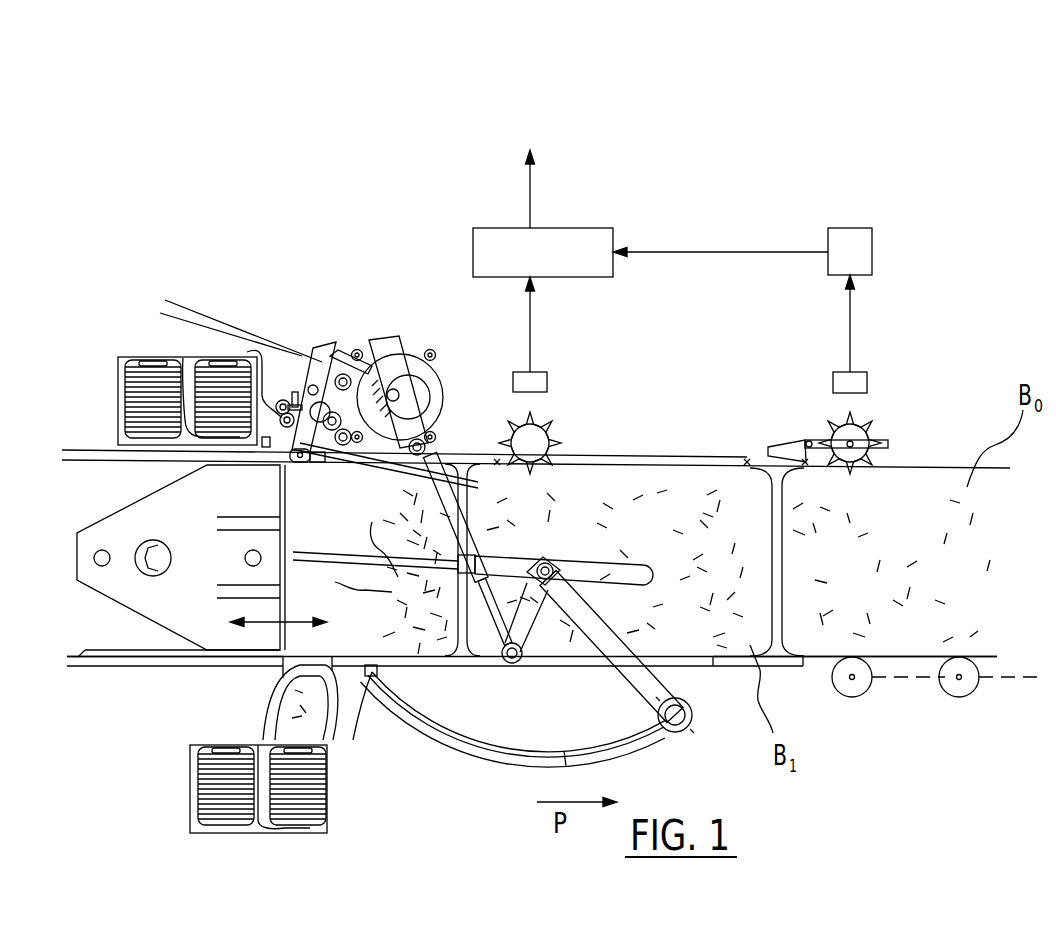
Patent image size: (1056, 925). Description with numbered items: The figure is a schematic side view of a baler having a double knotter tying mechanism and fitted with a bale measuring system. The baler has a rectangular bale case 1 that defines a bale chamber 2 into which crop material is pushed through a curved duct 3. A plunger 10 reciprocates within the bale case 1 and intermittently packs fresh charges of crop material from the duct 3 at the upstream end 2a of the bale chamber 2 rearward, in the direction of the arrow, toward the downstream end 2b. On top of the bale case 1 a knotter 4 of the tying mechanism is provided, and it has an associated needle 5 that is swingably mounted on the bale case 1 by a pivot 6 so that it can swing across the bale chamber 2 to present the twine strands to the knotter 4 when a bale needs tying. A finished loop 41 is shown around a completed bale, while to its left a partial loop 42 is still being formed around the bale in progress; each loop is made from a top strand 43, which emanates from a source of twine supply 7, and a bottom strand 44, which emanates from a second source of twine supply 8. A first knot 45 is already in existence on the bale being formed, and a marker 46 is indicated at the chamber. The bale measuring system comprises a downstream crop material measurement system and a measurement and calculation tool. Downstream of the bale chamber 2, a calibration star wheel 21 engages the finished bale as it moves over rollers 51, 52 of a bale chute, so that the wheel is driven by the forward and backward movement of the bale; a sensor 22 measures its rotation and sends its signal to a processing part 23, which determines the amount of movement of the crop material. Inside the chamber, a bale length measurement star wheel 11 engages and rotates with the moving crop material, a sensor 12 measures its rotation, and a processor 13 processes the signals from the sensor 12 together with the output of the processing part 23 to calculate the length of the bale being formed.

The bale case 1 is at (372, 186).
The bale chamber 2 is at (700, 448).
The upstream end of the bale chamber 2a is at (245, 682).
The downstream end of the bale chamber 2b is at (823, 712).
The curved duct 3 is at (277, 712).
The knotter 4 is at (424, 296).
The needle 5 is at (452, 783).
The pivot 6 is at (545, 555).
The source of twine supply 7 is at (123, 390).
The second source of twine supply 8 is at (190, 785).
The plunger 10 is at (123, 607).
The bale length measurement star wheel 11 is at (553, 424).
The star wheel sensor 12 is at (540, 378).
The processor 13 is at (567, 238).
The calibration star wheel 21 is at (867, 422).
The calibration star wheel sensor 22 is at (860, 380).
The processing part 23 is at (852, 248).
The loop 41 is at (720, 657).
The partial loop 42 is at (425, 690).
The top strand 43 is at (365, 480).
The bottom strand 44 is at (353, 742).
The first knot 45 is at (747, 462).
The marker 46 is at (497, 460).
The roller 51 is at (860, 690).
The roller 52 is at (967, 690).